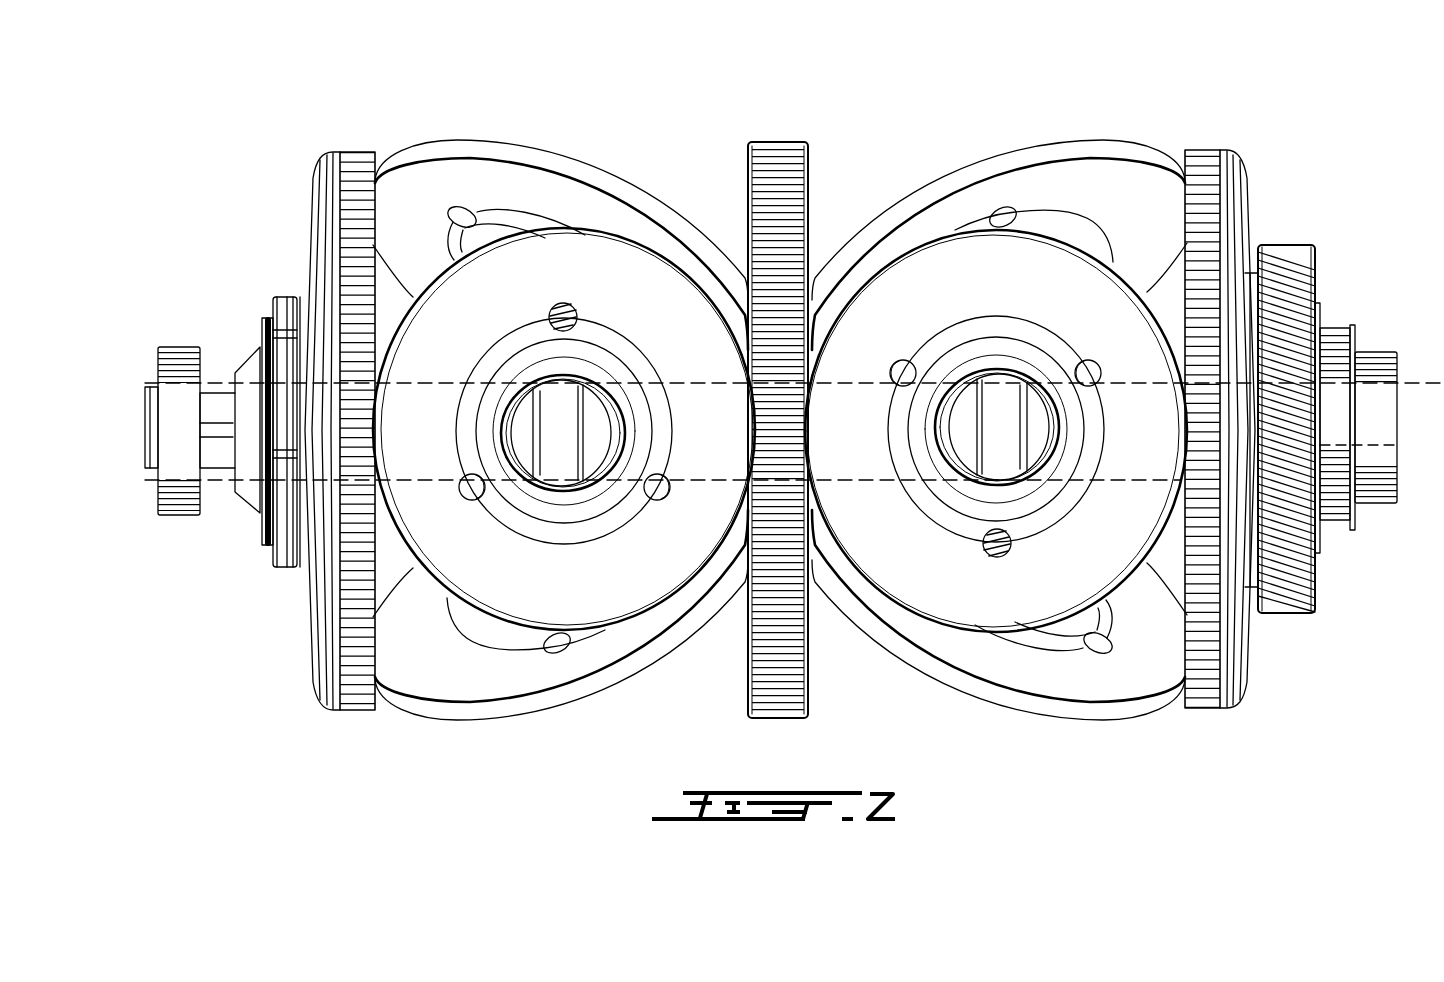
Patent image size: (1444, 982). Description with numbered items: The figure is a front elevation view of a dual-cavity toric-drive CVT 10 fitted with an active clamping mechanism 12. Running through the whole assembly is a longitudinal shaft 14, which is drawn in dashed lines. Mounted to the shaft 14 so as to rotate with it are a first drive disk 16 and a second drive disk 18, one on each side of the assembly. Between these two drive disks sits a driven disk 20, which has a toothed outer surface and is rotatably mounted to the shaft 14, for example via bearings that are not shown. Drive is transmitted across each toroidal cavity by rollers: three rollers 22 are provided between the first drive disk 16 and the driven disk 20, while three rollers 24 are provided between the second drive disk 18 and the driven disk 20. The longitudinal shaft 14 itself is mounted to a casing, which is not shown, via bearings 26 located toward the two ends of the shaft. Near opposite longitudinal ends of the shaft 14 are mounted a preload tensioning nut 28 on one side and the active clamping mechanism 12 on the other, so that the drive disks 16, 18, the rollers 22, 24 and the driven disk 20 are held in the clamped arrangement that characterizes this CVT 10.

The toric-drive CVT 10 is at (1138, 112).
The active clamping mechanism 12 is at (1312, 243).
The longitudinal shaft 14 is at (176, 490).
The first drive disk 16 is at (1198, 688).
The second drive disk 18 is at (357, 682).
The driven disk 20 is at (742, 686).
The rollers 22 is at (1057, 715).
The rollers 24 is at (510, 718).
The bearings 26 is at (178, 365).
The preload tensioning nut 28 is at (283, 315).